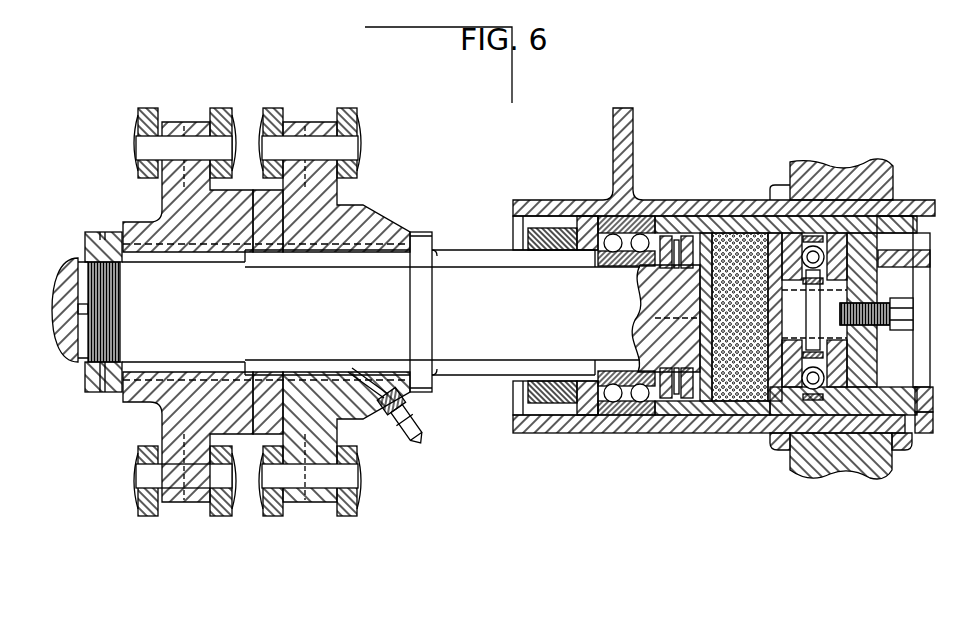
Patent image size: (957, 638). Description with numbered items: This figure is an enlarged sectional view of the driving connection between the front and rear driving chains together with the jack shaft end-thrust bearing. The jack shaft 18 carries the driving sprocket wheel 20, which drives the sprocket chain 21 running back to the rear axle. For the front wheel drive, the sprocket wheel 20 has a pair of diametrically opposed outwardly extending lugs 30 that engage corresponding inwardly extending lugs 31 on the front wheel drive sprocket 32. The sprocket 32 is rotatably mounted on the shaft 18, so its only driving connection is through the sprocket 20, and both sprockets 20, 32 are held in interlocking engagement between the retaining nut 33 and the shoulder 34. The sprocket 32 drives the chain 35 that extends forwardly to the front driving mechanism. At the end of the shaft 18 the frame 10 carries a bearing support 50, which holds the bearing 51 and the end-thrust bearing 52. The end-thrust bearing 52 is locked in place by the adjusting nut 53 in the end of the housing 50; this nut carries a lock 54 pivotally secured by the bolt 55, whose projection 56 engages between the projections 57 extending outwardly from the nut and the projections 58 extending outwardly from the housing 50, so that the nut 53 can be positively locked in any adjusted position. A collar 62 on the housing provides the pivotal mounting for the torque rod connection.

The frame 10 is at (634, 134).
The jack shaft 18 is at (75, 258).
The driving sprocket wheel 20 is at (133, 223).
The sprocket chain 21 is at (208, 122).
The outwardly extending lug 30 is at (268, 423).
The inwardly extending lug 31 is at (263, 192).
The front wheel drive sprocket 32 is at (328, 194).
The retaining nut 33 is at (86, 236).
The shoulder 34 is at (425, 232).
The chain 35 is at (330, 122).
The bearing support 50 is at (701, 212).
The bearing 51 is at (647, 217).
The end-thrust bearing 52 is at (840, 236).
The adjusting nut 53 is at (733, 217).
The lock 54 is at (890, 275).
The bolt 55 is at (890, 338).
The projection 56 is at (923, 437).
The projection 57 is at (933, 407).
The projection 58 is at (932, 433).
The collar 62 is at (828, 173).